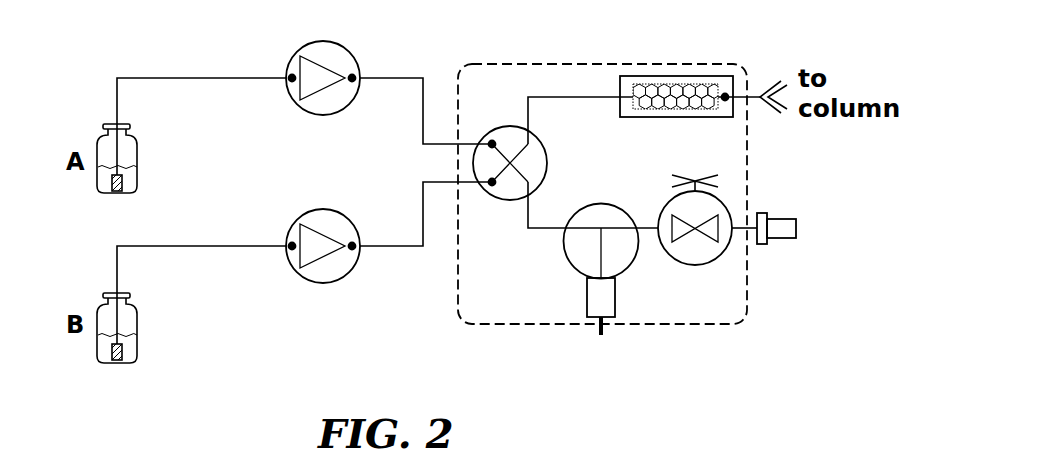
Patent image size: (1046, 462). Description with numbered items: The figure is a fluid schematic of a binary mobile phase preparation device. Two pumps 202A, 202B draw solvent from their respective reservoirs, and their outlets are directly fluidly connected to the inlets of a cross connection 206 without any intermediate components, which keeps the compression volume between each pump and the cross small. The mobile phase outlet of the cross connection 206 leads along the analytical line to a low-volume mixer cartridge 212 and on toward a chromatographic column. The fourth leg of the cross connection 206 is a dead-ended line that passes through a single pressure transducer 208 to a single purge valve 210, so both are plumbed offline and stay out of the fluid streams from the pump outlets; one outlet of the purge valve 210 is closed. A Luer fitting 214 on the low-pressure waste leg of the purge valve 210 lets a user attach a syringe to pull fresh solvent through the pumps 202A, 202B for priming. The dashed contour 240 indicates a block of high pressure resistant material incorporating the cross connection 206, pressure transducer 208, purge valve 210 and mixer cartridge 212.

The pump 202A is at (389, 79).
The pump 202B is at (389, 248).
The cross connection 206 is at (562, 162).
The pressure transducer 208 is at (601, 255).
The purge valve 210 is at (695, 235).
The mixer cartridge 212 is at (703, 110).
The Luer fitting 214 is at (794, 228).
The dashed contour 240 is at (602, 210).